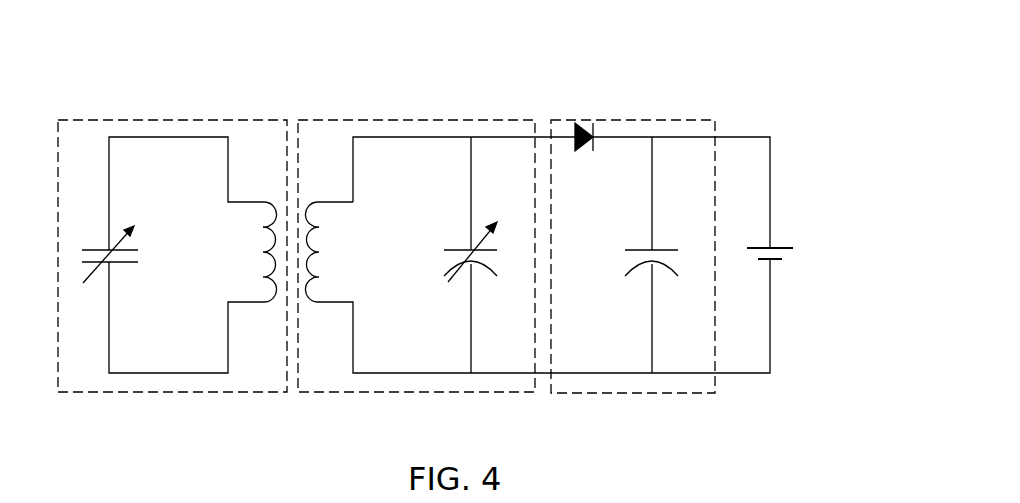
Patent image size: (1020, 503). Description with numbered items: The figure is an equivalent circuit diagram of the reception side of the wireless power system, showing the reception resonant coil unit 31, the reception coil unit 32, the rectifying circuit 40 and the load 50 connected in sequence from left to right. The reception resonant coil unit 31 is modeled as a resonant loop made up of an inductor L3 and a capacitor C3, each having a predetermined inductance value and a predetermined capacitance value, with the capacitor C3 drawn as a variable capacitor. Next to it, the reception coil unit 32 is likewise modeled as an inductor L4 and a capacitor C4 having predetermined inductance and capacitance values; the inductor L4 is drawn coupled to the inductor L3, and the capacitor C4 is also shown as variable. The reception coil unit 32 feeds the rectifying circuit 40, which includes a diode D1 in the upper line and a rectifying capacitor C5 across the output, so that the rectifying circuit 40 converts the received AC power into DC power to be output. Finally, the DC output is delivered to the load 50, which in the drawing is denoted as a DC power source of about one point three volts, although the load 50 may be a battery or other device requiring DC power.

The reception resonant coil unit 31 is at (172, 225).
The reception coil unit 32 is at (534, 225).
The rectifying circuit 40 is at (633, 222).
The load 50 is at (779, 238).
The capacitor C3 is at (104, 270).
The inductor L3 is at (238, 253).
The inductor L4 is at (348, 253).
The capacitor C4 is at (488, 255).
The diode D1 is at (584, 118).
The rectifying capacitor C5 is at (669, 255).